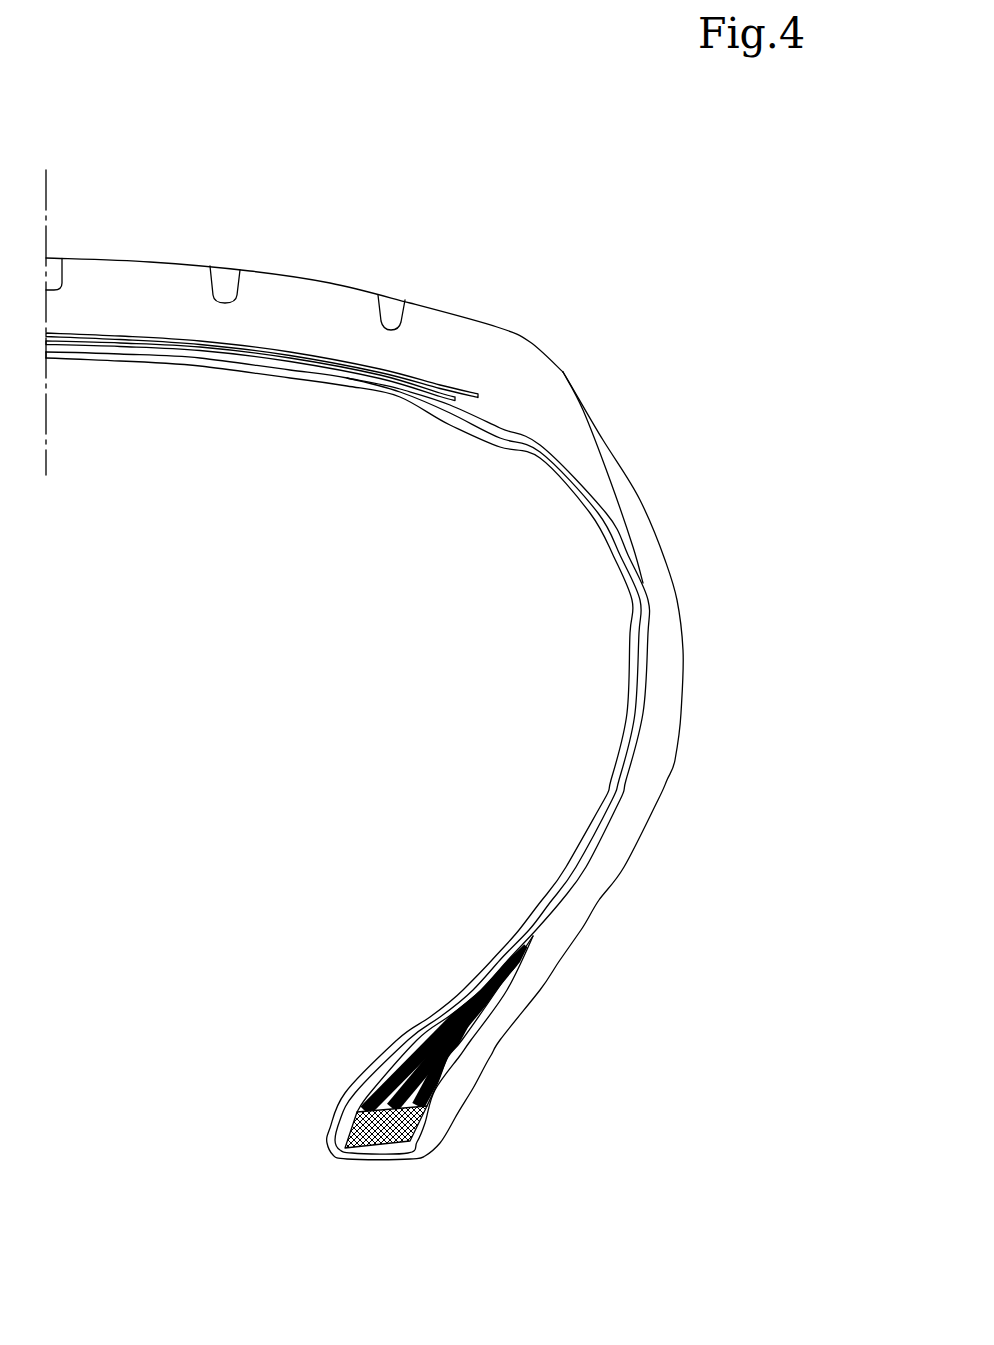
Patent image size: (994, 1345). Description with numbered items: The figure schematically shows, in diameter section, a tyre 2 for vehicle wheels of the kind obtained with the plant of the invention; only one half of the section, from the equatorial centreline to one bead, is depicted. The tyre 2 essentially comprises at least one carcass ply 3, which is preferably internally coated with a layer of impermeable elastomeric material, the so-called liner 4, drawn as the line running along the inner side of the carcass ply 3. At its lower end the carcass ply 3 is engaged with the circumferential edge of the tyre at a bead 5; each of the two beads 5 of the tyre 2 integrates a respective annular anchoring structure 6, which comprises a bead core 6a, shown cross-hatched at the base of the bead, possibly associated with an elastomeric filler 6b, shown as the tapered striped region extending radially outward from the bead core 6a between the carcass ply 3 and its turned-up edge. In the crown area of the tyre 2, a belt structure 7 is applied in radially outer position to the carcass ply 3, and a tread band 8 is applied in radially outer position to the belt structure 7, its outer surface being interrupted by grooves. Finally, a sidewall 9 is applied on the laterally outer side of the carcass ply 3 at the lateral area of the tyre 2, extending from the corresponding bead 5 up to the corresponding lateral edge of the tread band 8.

The tyre 2 is at (222, 780).
The carcass ply 3 is at (540, 443).
The liner 4 is at (460, 428).
The bead 5 is at (490, 1116).
The annular anchoring structure 6 is at (368, 1095).
The bead core 6a is at (378, 1127).
The elastomeric filler 6b is at (442, 1033).
The belt structure 7 is at (438, 373).
The tread band 8 is at (302, 277).
The sidewall 9 is at (681, 713).